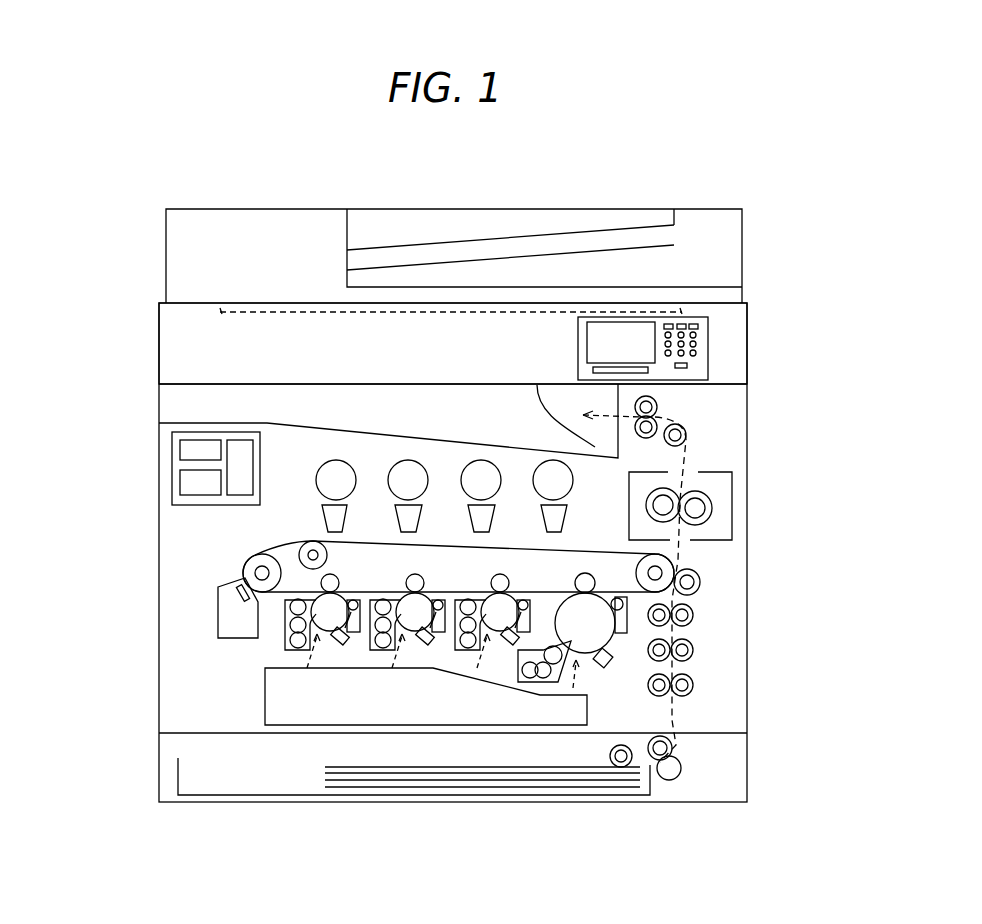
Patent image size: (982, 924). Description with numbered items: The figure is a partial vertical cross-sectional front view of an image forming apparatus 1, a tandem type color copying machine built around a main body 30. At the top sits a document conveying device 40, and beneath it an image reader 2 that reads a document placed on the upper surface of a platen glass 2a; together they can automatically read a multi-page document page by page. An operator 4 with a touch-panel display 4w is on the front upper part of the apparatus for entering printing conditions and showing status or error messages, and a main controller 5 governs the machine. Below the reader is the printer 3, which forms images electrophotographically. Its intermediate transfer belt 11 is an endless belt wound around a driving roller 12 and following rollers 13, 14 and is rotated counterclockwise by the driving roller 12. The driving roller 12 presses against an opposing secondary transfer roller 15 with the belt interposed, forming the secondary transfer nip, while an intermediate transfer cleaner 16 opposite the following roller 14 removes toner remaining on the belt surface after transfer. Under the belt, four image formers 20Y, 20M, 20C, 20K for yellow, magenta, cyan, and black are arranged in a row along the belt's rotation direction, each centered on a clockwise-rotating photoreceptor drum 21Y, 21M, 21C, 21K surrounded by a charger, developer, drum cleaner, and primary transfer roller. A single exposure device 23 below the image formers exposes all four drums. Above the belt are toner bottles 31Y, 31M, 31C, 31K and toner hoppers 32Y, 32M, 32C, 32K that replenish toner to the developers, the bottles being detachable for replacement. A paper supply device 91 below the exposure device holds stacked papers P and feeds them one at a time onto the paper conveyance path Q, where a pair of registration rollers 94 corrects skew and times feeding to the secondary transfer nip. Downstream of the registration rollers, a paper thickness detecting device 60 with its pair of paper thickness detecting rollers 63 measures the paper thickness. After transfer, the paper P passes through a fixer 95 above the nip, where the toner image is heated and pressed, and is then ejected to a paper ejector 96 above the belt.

The image forming apparatus 1 is at (110, 379).
The image reader 2 is at (419, 342).
The platen glass 2a is at (246, 314).
The printer 3 is at (738, 407).
The operator 4 is at (655, 342).
The display 4w is at (600, 338).
The main controller 5 is at (158, 476).
The intermediate transfer belt 11 is at (456, 546).
The driving roller 12 is at (663, 556).
The following roller 13 is at (310, 545).
The following roller 14 is at (248, 566).
The secondary transfer roller 15 is at (700, 582).
The intermediate transfer cleaner 16 is at (216, 625).
The image former 20Y is at (322, 710).
The image former 20M is at (409, 710).
The image former 20C is at (493, 710).
The image former 20K is at (574, 710).
The photoreceptor drum 21Y is at (334, 604).
The photoreceptor drum 21M is at (419, 604).
The photoreceptor drum 21C is at (504, 604).
The photoreceptor drum 21K is at (590, 604).
The exposure device 23 is at (265, 712).
The main body 30 is at (738, 511).
The toner bottle 31Y is at (336, 460).
The toner bottle 31M is at (408, 460).
The toner bottle 31C is at (481, 460).
The toner bottle 31K is at (553, 460).
The toner hopper 32Y is at (346, 512).
The toner hopper 32M is at (418, 512).
The toner hopper 32C is at (492, 512).
The toner hopper 32K is at (566, 512).
The document conveying device 40 is at (141, 229).
The paper thickness detecting device 60 is at (702, 633).
The pair of paper thickness detecting rollers 63 is at (695, 650).
The paper supply device 91 is at (696, 784).
The pair of registration rollers 94 is at (695, 685).
The fixer 95 is at (745, 459).
The paper ejector 96 is at (537, 385).
The paper P is at (503, 775).
The paper conveyance path Q is at (682, 715).